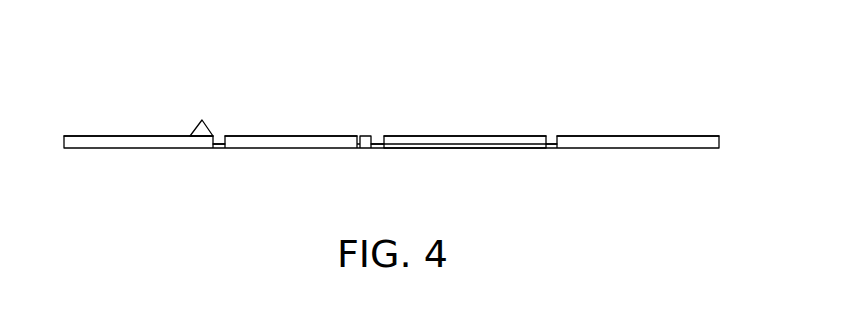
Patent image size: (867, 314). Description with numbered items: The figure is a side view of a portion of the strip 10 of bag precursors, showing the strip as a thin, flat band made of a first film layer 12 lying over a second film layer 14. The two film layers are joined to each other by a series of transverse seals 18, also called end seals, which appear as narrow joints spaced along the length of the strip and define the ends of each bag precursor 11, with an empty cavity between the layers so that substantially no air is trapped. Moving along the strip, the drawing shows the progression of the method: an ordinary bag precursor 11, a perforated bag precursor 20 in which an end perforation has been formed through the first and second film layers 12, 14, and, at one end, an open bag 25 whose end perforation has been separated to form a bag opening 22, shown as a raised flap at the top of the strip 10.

The strip 10 is at (650, 176).
The bag precursor 11 is at (518, 144).
The first film layer 12 is at (479, 134).
The second film layer 14 is at (442, 149).
The transverse seal 18 is at (217, 137).
The perforated bag precursor 20 is at (293, 149).
The bag opening 22 is at (203, 119).
The open bag 25 is at (143, 149).